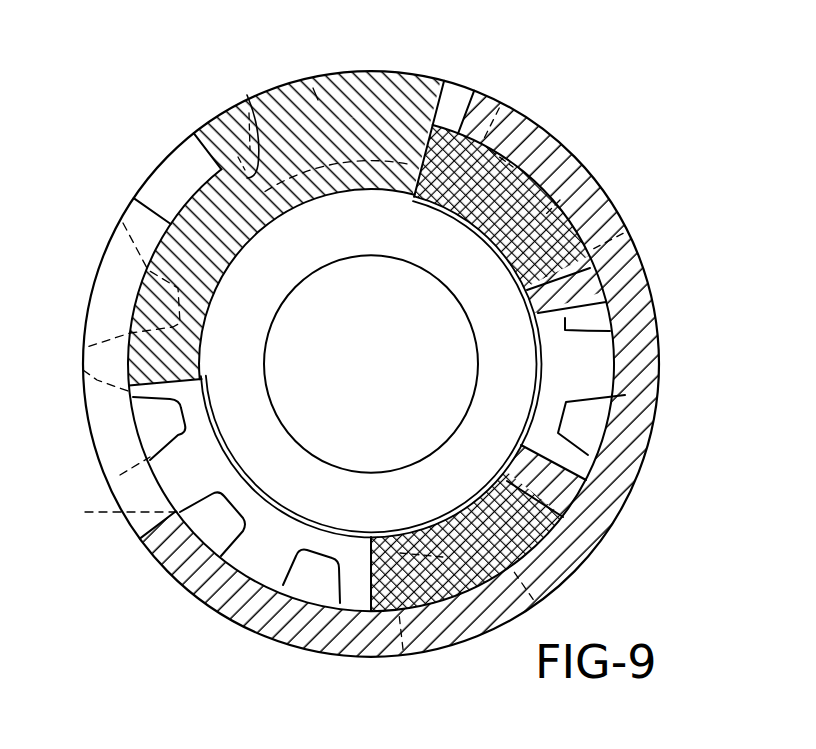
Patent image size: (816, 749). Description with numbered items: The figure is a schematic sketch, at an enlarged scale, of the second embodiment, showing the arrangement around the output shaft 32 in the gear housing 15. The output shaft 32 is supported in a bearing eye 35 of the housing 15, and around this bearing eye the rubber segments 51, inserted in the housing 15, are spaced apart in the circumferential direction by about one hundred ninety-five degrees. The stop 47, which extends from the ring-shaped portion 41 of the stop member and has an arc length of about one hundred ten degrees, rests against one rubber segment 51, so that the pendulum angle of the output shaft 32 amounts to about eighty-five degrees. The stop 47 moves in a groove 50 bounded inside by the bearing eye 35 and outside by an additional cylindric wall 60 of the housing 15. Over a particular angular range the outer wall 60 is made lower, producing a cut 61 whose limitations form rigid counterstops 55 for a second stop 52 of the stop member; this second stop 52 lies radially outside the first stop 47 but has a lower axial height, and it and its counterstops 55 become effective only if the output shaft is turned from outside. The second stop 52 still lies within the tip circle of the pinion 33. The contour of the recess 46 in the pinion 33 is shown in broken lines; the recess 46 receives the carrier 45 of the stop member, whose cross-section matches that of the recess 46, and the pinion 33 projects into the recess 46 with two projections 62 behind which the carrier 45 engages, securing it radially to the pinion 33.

The gear housing 15 is at (641, 280).
The output shaft 32 is at (418, 351).
The pinion 33 is at (583, 450).
The bearing eye 35 is at (548, 387).
The ring-shaped portion 41 is at (533, 350).
The carrier 45 is at (313, 88).
The recess 46 is at (247, 95).
The stop 47 is at (132, 203).
The groove 50 is at (157, 560).
The rubber segments 51 is at (562, 178).
The second stop 52 is at (205, 138).
The rigid counterstops 55 is at (150, 534).
The cylindric wall 60 is at (258, 632).
The cut 61 is at (98, 302).
The projections 62 is at (197, 157).